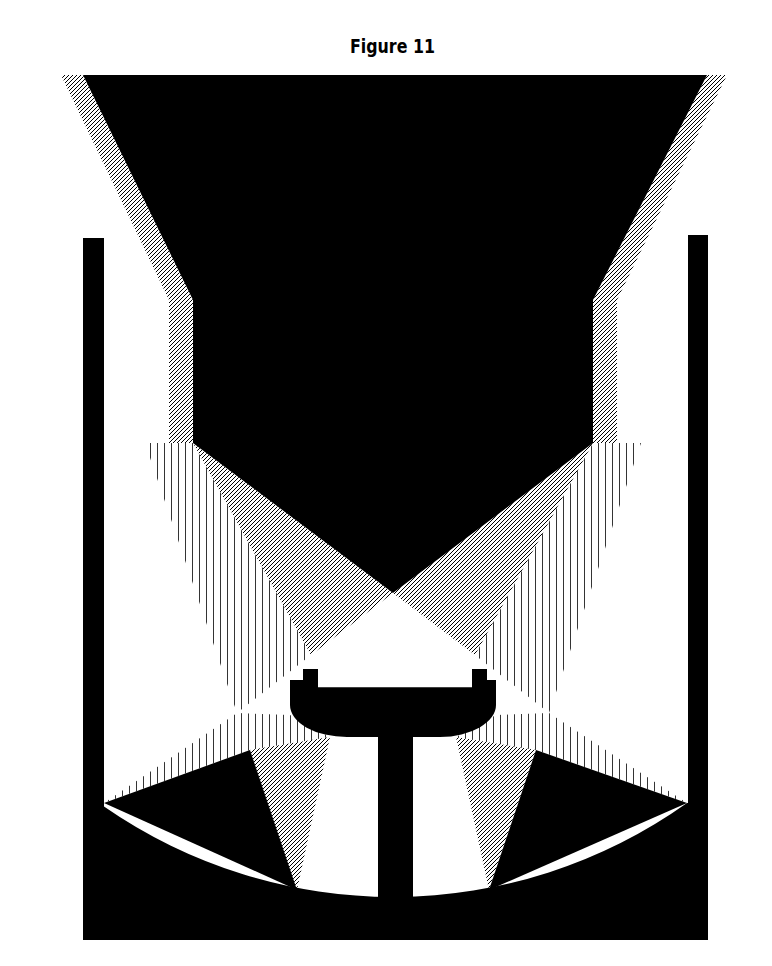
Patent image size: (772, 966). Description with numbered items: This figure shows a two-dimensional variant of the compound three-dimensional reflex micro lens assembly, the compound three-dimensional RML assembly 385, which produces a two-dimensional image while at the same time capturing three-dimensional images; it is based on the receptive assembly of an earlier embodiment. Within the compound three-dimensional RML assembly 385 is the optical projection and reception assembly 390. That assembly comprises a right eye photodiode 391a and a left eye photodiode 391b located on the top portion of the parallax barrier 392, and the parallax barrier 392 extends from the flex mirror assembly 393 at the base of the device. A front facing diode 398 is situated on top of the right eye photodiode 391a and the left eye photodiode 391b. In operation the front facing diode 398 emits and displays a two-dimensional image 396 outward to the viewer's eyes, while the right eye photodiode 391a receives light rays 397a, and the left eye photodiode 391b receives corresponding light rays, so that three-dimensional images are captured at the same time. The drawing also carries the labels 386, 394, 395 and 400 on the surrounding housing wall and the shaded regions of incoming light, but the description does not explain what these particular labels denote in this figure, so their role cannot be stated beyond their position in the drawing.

The compound 3-D RML assembly 385 is at (378, 880).
The housing wall 386 is at (368, 587).
The optical projection and reception assembly 390 is at (302, 672).
The right eye photodiode 391a is at (492, 713).
The left eye photodiode 391b is at (293, 720).
The parallax barrier 392 is at (416, 815).
The flex mirror assembly 393 is at (560, 873).
The light beam side region 394 is at (636, 371).
The light beam outer region 395 is at (670, 195).
The two-dimensional image 396 is at (402, 630).
The light rays 397a is at (520, 637).
The front facing diode 398 is at (395, 675).
The light beam 400 is at (402, 578).